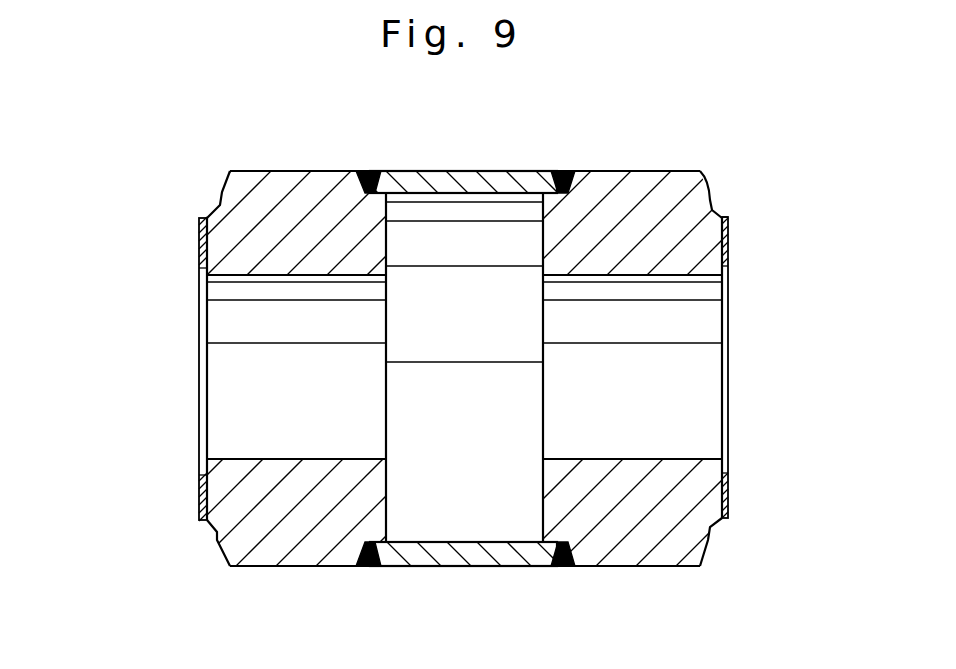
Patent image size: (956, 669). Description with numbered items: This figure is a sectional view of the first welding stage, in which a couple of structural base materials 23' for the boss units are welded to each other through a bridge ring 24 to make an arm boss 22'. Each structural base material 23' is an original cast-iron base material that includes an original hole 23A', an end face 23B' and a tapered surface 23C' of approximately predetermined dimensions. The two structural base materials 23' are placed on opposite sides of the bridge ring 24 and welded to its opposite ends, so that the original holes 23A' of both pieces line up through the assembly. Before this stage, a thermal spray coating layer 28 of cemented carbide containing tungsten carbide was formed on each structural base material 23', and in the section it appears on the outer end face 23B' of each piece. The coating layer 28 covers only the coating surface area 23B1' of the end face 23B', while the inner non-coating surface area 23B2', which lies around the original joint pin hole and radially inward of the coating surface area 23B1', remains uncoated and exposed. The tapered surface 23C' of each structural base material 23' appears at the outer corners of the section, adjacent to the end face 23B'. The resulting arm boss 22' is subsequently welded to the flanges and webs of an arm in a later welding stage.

The structural base material 23' is at (478, 357).
The arm boss 22' is at (645, 341).
The bridge ring 24 is at (462, 550).
The original hole 23A' is at (462, 309).
The end face 23B' is at (461, 356).
The coating surface area 23B1' is at (780, 205).
The inner non-coating surface area 23B2' is at (468, 251).
The thermal spray coating layer 28 is at (200, 510).
The tapered surface 23C' is at (473, 380).